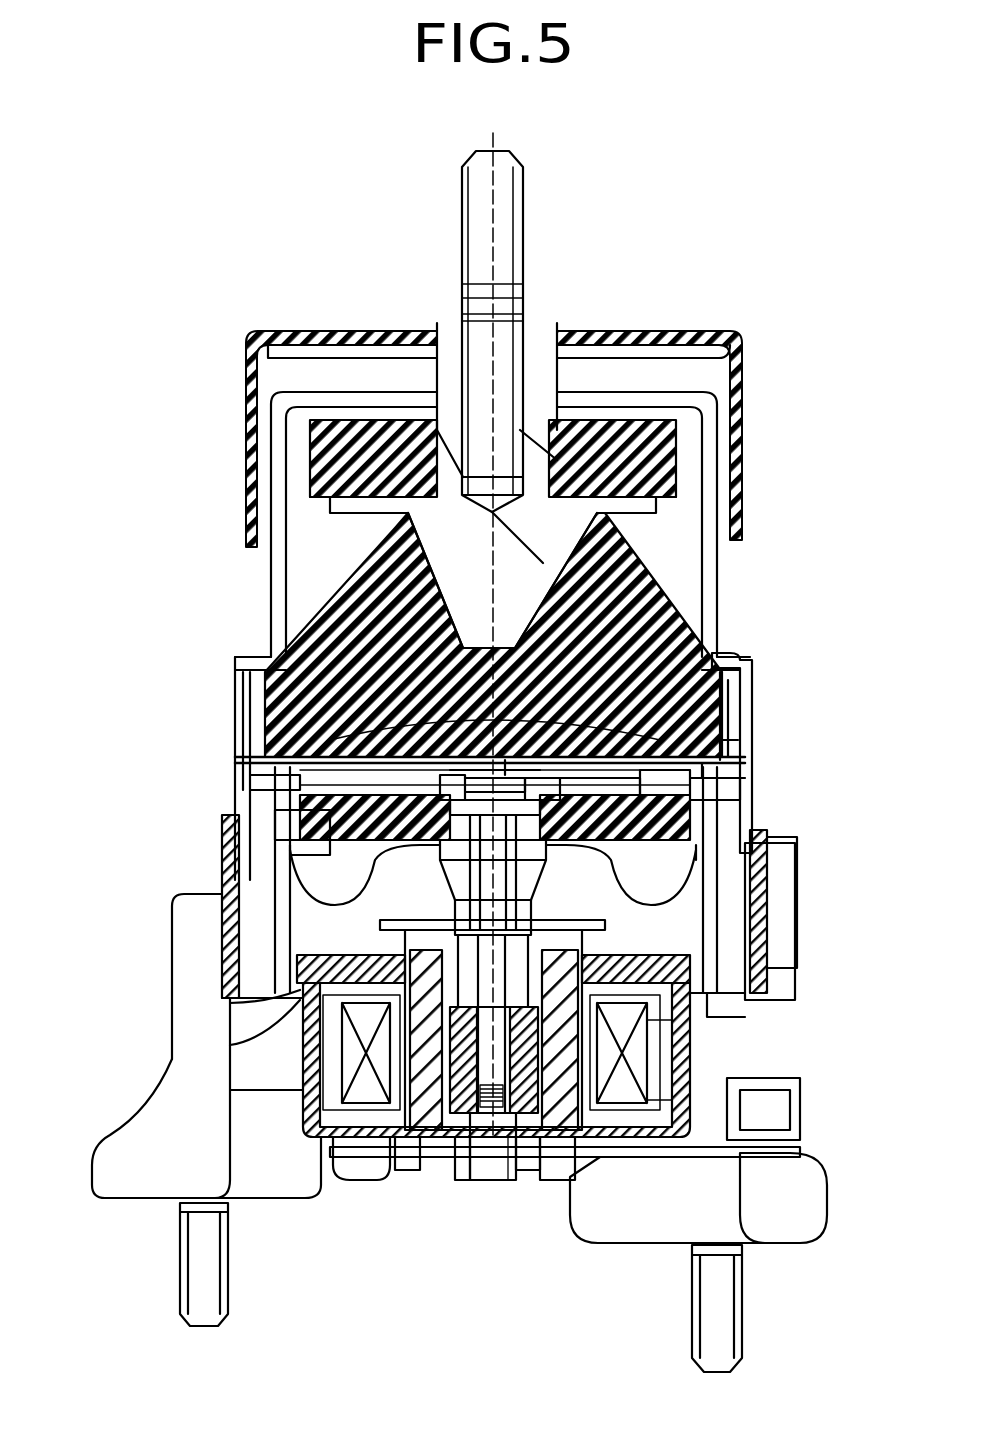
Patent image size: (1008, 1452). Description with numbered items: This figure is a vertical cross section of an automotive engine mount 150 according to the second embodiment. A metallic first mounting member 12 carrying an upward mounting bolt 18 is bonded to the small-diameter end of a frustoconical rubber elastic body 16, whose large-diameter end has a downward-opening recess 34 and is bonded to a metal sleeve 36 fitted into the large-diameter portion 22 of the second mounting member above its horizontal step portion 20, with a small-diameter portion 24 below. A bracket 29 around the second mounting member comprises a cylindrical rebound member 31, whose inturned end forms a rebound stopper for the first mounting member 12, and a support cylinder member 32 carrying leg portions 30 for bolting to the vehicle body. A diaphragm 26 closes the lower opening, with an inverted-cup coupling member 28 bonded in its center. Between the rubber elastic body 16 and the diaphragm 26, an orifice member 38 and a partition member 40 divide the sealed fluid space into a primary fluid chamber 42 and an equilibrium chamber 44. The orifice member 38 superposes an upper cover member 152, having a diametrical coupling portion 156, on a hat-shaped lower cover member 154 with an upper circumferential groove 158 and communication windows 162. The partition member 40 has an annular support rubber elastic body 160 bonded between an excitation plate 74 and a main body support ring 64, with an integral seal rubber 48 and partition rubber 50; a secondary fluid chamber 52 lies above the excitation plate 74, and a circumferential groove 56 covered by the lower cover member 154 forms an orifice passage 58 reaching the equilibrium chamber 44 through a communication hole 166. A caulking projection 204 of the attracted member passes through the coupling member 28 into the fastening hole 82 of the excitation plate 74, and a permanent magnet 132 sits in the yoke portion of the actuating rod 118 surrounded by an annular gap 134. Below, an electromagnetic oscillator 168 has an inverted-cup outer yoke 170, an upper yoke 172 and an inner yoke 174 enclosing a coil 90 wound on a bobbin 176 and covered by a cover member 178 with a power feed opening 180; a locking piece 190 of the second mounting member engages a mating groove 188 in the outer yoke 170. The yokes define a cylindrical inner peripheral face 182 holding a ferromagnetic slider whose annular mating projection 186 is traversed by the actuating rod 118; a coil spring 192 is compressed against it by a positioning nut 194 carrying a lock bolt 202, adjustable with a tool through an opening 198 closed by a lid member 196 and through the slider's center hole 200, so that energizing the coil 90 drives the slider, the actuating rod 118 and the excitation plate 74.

The automotive engine mount 150 is at (305, 233).
The mounting bolt 18 is at (512, 262).
The first mounting member 12 is at (650, 425).
The rebound member 31 is at (252, 548).
The support rubber elastic body 160 is at (404, 768).
The rubber elastic body 16 is at (620, 590).
The recess 34 is at (690, 620).
The primary fluid chamber 42 is at (725, 655).
The bracket 29 is at (777, 658).
The metal sleeve 36 is at (740, 700).
The large-diameter portion 22 is at (250, 714).
The seal rubber 48 is at (738, 740).
The orifice member 38 is at (430, 702).
The caulking projection 204 is at (512, 760).
The coupling member 28 is at (548, 770).
The upper cover member 152 is at (445, 775).
The lower cover member 154 is at (473, 778).
The fastening hole 82 is at (485, 790).
The annular gap 134 is at (520, 780).
The excitation plate 74 is at (570, 790).
The secondary fluid chamber 52 is at (604, 785).
The communication window 162 is at (640, 780).
The main body support ring 64 is at (375, 790).
The partition member 40 is at (410, 790).
The diametrical coupling portion 156 is at (262, 764).
The step portion 20 is at (740, 770).
The upper circumferential groove 158 is at (245, 792).
The partition rubber 50 is at (750, 798).
The orifice passage 58 is at (285, 822).
The circumferential groove 56 is at (310, 852).
The communication hole 166 is at (300, 872).
The support cylinder member 32 is at (780, 890).
The diaphragm 26 is at (493, 875).
The equilibrium chamber 44 is at (420, 890).
The permanent magnet 132 is at (480, 878).
The coil spring 192 is at (560, 910).
The annular mating projection 186 is at (560, 930).
The upper yoke 172 is at (622, 965).
The actuating rod 118 is at (400, 928).
The electromagnetic oscillator 168 is at (732, 978).
The small-diameter portion 24 is at (222, 954).
The locking piece 190 is at (230, 1003).
The mating groove 188 is at (250, 1040).
The inner yoke 174 is at (650, 1043).
The cover member 178 is at (662, 1080).
The outer yoke 170 is at (300, 1120).
The power feed opening 180 is at (800, 1110).
The leg portions 30 is at (148, 1196).
The coil 90 is at (356, 1185).
The lid member 196 is at (408, 1172).
The center hole 200 is at (462, 1180).
The inner peripheral face 182 is at (440, 1180).
The lock bolt 202 is at (484, 1180).
The positioning nut 194 is at (512, 1170).
The opening 198 is at (532, 1180).
The bobbin 176 is at (622, 1153).